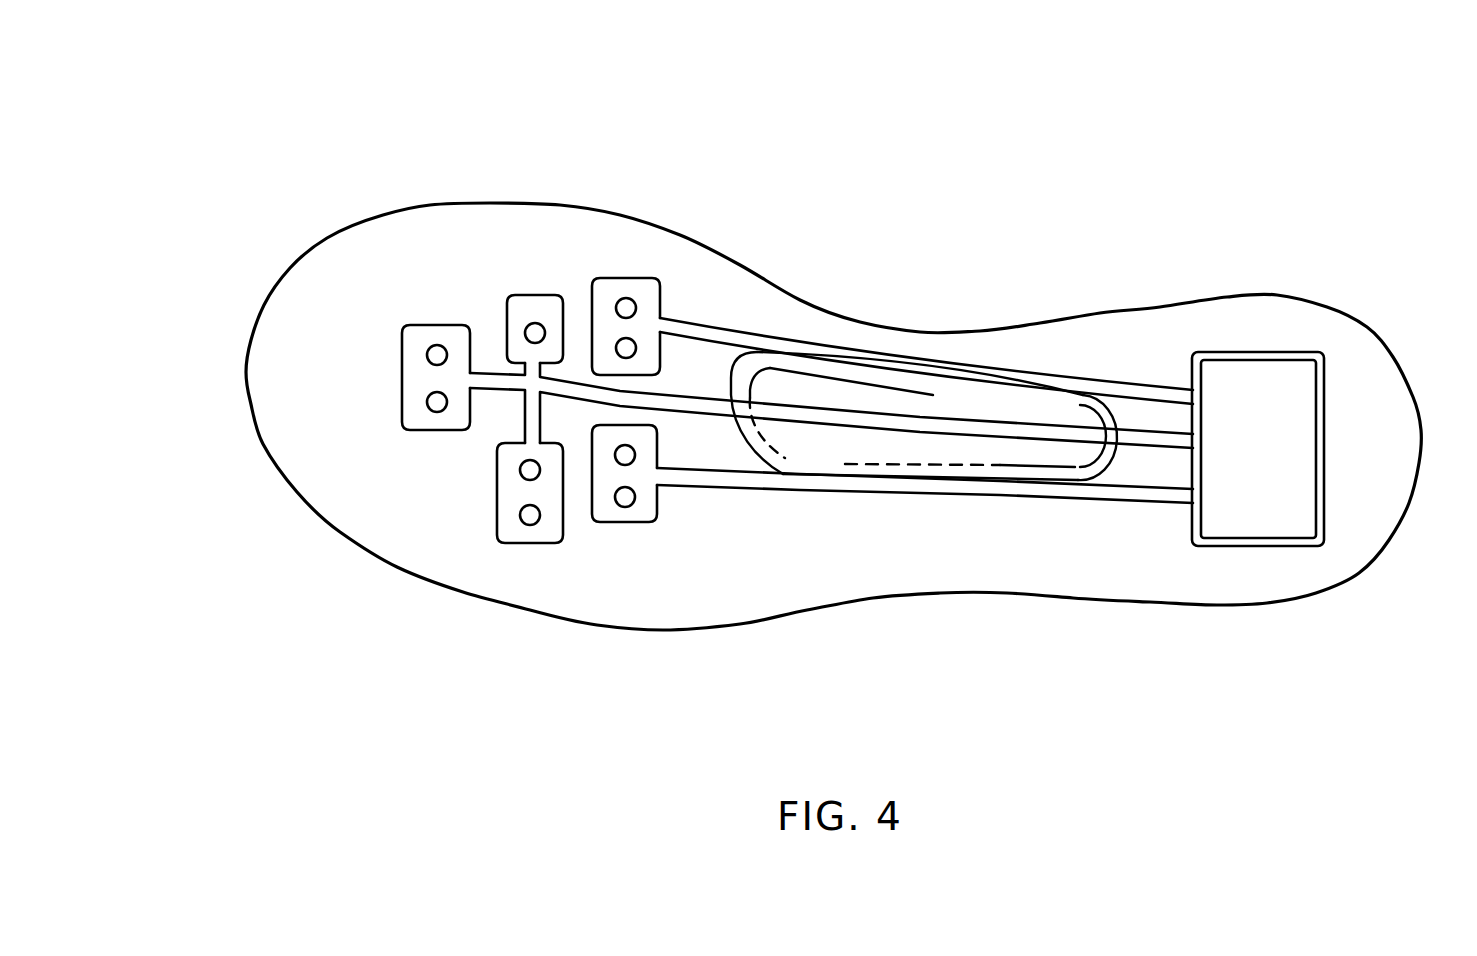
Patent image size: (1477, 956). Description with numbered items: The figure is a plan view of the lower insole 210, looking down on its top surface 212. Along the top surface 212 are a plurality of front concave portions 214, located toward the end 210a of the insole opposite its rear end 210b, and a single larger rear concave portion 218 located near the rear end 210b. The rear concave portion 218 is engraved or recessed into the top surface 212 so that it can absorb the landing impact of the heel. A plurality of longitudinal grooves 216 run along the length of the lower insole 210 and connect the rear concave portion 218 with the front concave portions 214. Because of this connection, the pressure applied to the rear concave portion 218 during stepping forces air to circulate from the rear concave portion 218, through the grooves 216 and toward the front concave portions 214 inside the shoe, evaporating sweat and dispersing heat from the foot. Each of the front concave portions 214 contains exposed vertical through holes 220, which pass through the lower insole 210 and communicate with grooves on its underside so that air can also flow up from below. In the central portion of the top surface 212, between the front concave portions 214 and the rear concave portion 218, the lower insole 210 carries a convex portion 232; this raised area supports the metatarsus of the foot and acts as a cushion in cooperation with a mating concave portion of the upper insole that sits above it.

The lower insole 210 is at (451, 117).
The heel portion of insole 210a is at (210, 328).
The rear end 210b is at (1376, 283).
The top surface 212 is at (1070, 577).
The front concave portions 214 is at (484, 510).
The longitudinal grooves 216 is at (796, 484).
The rear concave portion 218 is at (1270, 383).
The vertical through holes 220 is at (626, 347).
The convex portion 232 is at (823, 388).